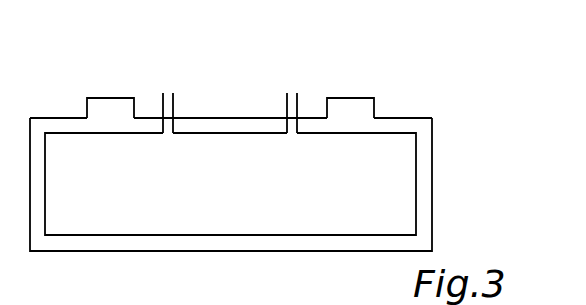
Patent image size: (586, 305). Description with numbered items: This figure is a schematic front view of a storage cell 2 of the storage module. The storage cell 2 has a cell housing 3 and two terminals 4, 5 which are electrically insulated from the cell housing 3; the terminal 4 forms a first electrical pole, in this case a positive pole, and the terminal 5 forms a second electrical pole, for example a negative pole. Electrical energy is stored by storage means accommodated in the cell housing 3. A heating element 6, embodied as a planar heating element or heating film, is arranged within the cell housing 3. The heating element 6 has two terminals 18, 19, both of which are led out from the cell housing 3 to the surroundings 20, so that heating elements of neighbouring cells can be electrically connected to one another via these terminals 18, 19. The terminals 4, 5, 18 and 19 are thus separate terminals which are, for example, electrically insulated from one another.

The storage cell 2 is at (432, 215).
The cell housing 3 is at (405, 118).
The terminal 4 is at (110, 98).
The terminal 5 is at (349, 98).
The heating element 6 is at (416, 187).
The terminal 18 is at (168, 92).
The terminal 19 is at (293, 90).
The surroundings 20 is at (560, 124).